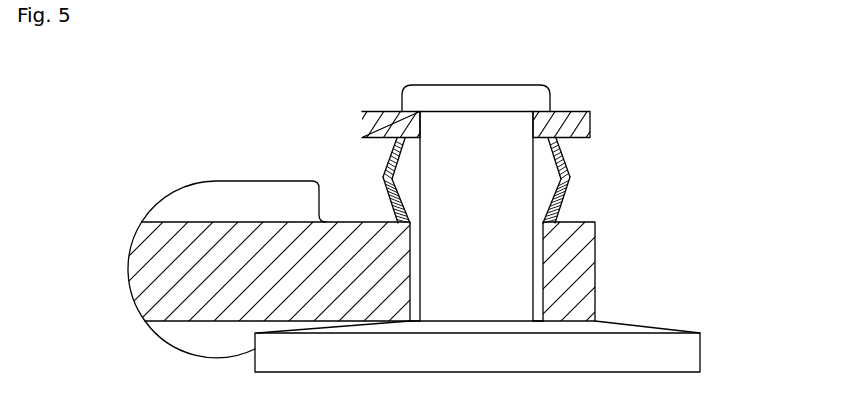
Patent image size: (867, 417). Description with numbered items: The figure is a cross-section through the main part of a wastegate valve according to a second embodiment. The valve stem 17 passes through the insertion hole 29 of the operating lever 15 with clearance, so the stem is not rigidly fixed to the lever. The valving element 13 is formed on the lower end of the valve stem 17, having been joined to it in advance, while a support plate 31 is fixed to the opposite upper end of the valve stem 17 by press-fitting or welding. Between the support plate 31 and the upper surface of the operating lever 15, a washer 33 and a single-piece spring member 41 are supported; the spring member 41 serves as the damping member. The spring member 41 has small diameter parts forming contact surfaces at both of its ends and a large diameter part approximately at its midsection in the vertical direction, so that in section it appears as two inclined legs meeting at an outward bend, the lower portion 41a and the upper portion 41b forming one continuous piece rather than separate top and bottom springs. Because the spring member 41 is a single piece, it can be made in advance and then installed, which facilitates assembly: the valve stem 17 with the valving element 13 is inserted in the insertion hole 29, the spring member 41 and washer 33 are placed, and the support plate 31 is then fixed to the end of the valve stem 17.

The valving element 13 is at (700, 356).
The operating lever 15 is at (595, 252).
The valve stem 17 is at (492, 289).
The insertion hole 29 is at (410, 293).
The support plate 31 is at (547, 85).
The washer 33 is at (592, 122).
The spring member 41 is at (544, 180).
The lower leg portion 41a is at (567, 202).
The upper leg portion 41b is at (567, 167).